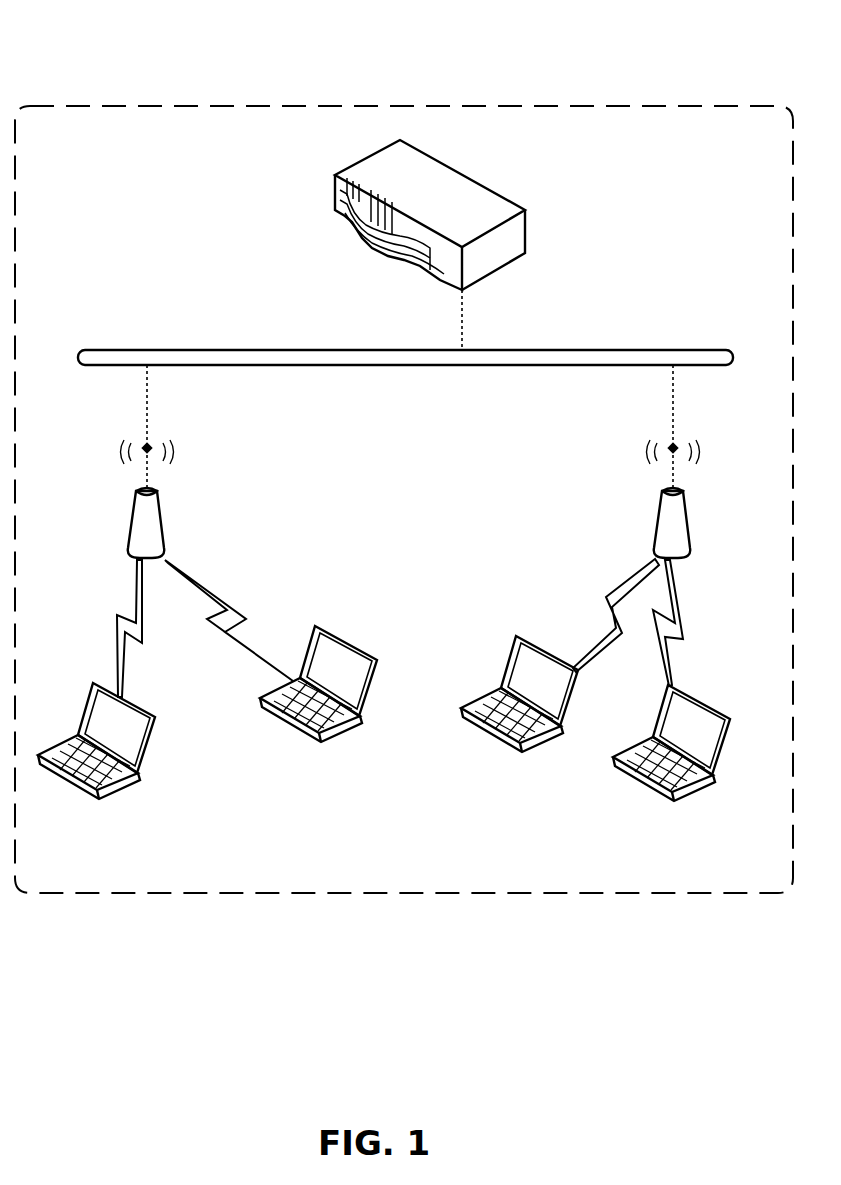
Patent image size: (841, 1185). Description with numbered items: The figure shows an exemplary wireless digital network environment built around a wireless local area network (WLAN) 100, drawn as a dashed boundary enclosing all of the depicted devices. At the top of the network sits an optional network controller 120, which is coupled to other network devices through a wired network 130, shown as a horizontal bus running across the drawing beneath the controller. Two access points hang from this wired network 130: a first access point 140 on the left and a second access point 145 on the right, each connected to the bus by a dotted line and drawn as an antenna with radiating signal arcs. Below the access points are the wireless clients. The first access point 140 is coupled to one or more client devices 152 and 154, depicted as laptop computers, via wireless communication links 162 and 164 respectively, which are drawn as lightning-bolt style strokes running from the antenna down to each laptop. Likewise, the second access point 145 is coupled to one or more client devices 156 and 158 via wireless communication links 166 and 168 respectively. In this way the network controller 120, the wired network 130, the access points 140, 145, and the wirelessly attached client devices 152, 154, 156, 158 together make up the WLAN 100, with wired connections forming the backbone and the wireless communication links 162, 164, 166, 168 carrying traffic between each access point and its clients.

The wireless local area network (WLAN) 100 is at (70, 106).
The network controller 120 is at (463, 178).
The wired network 130 is at (232, 350).
The access point 140 is at (162, 513).
The access point 145 is at (657, 520).
The client device 152 is at (213, 691).
The client device 154 is at (342, 642).
The client device 156 is at (502, 677).
The client device 158 is at (771, 691).
The wireless communication link 162 is at (108, 611).
The wireless communication link 164 is at (268, 596).
The wireless communication link 166 is at (611, 598).
The wireless communication link 168 is at (728, 623).